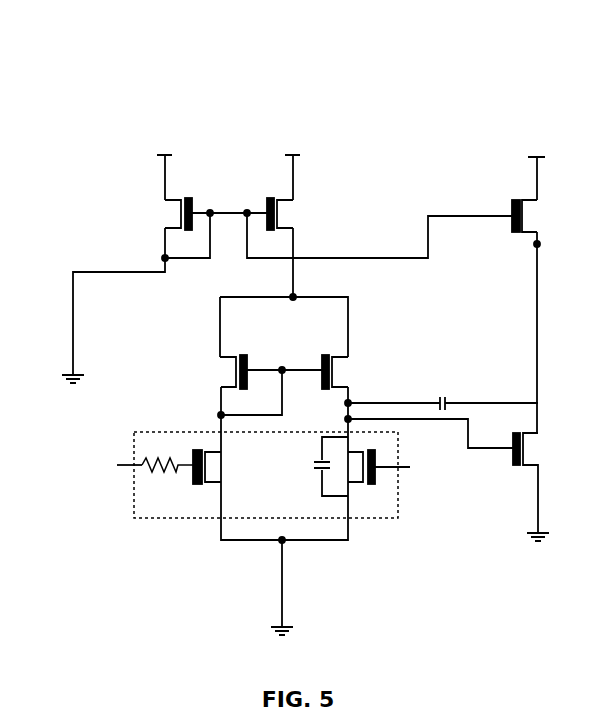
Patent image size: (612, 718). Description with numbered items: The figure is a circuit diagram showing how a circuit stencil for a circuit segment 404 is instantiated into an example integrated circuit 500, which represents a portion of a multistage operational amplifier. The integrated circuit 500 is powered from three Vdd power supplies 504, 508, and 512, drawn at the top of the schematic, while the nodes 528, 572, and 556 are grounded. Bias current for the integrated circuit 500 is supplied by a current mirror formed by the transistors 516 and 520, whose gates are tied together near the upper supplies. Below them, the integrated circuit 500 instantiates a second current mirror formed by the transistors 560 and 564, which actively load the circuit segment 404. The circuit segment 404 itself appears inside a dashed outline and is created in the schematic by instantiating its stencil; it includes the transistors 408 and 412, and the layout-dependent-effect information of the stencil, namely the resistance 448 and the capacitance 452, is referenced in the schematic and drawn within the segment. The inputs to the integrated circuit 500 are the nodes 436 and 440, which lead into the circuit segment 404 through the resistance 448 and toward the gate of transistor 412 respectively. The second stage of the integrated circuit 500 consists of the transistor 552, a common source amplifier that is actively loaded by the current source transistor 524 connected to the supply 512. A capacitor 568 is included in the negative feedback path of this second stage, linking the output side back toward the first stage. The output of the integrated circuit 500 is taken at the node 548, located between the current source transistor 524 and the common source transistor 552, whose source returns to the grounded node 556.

The integrated circuit 500 is at (288, 117).
The Vdd power supply 504 is at (157, 168).
The Vdd power supply 508 is at (300, 168).
The Vdd power supply 512 is at (546, 167).
The transistor 516 is at (182, 210).
The transistor 520 is at (280, 212).
The current source transistor 524 is at (525, 212).
The node 528 is at (65, 385).
The node 548 is at (540, 244).
The transistor 552 is at (525, 448).
The node 556 is at (519, 547).
The transistor 560 is at (233, 375).
The transistor 564 is at (333, 370).
The capacitor 568 is at (443, 397).
The node 572 is at (300, 639).
The circuit segment 404 is at (266, 475).
The transistor 408 is at (208, 459).
The transistor 412 is at (370, 484).
The node 436 is at (114, 467).
The node 440 is at (409, 467).
The resistance 448 is at (167, 457).
The capacitance 452 is at (314, 466).